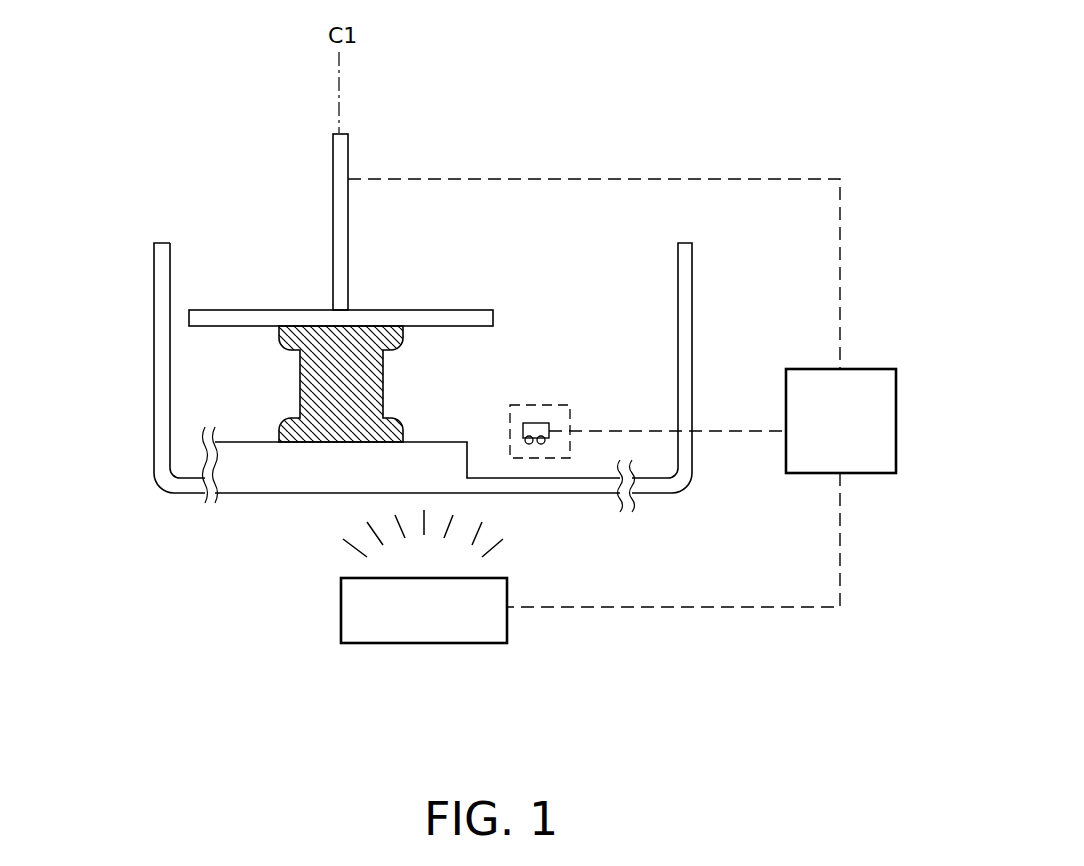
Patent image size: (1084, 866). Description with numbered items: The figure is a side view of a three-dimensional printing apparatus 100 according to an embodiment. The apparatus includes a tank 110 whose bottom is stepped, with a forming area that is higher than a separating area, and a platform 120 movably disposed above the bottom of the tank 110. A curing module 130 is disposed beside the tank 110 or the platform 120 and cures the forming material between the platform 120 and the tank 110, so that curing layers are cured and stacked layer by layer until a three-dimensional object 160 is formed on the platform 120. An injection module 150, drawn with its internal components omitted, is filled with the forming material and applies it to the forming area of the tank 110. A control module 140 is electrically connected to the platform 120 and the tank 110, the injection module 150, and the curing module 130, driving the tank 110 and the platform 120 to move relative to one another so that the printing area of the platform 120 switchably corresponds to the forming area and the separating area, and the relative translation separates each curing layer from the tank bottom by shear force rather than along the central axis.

The three-dimensional printing apparatus 100 is at (858, 718).
The tank 110 is at (265, 487).
The platform 120 is at (263, 317).
The curing module 130 is at (442, 643).
The control module 140 is at (868, 369).
The injection module 150 is at (540, 405).
The three-dimensional object 160 is at (312, 370).